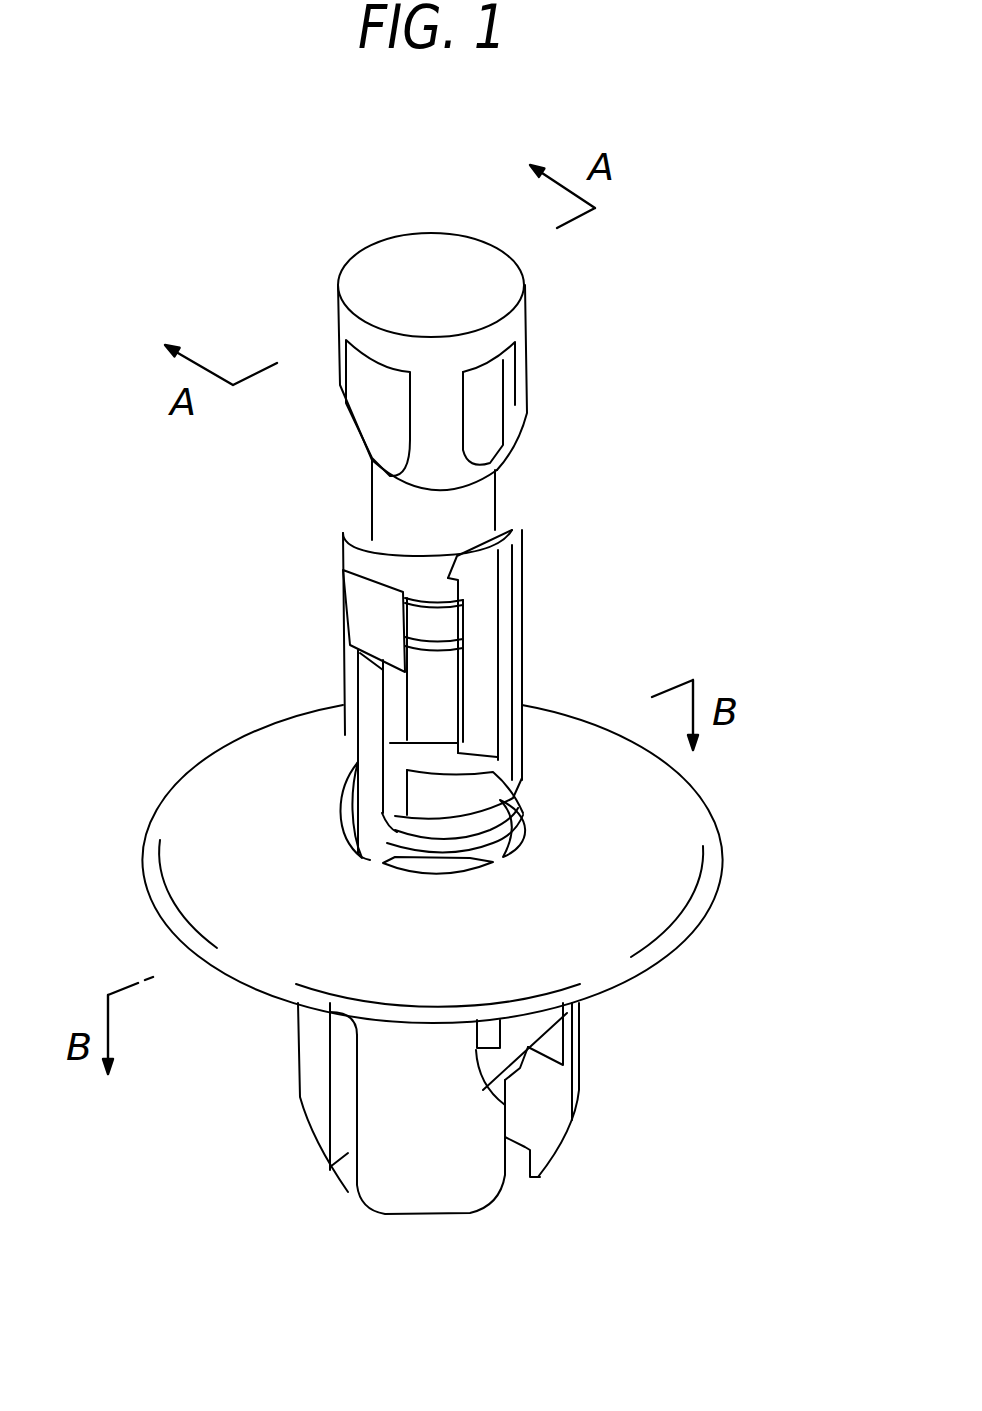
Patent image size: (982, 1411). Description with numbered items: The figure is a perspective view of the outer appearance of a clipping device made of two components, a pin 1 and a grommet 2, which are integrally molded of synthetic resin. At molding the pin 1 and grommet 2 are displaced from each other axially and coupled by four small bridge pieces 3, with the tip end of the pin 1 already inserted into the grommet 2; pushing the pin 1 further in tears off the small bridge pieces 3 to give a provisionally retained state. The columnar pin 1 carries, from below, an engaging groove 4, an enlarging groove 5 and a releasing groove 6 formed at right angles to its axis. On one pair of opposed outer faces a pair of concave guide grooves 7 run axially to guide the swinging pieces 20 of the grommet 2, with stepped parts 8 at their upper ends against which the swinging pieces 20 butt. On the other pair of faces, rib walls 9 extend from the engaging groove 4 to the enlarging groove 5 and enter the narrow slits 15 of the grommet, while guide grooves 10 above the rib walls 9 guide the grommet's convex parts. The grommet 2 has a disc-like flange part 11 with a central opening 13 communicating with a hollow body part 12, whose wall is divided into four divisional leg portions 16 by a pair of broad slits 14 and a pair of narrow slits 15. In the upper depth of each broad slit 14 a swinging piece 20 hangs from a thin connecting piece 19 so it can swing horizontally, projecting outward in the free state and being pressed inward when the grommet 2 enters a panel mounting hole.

The pin 1 is at (701, 386).
The grommet 2 is at (768, 1028).
The small bridge pieces 3 is at (370, 860).
The engaging groove 4 is at (482, 782).
The enlarging groove 5 is at (430, 627).
The releasing groove 6 is at (473, 502).
The guide grooves 7 is at (482, 410).
The stepped parts 8 is at (487, 373).
The rib walls 9 is at (360, 734).
The guide grooves 10 is at (370, 430).
The flange part 11 is at (262, 973).
The body part 12 is at (236, 1198).
The opening 13 is at (530, 808).
The broad slit 14 is at (513, 1177).
The narrow slit 15 is at (348, 1153).
The divisional leg portions 16 is at (305, 1098).
The connecting piece 19 is at (472, 1060).
The swinging piece 20 is at (530, 1023).